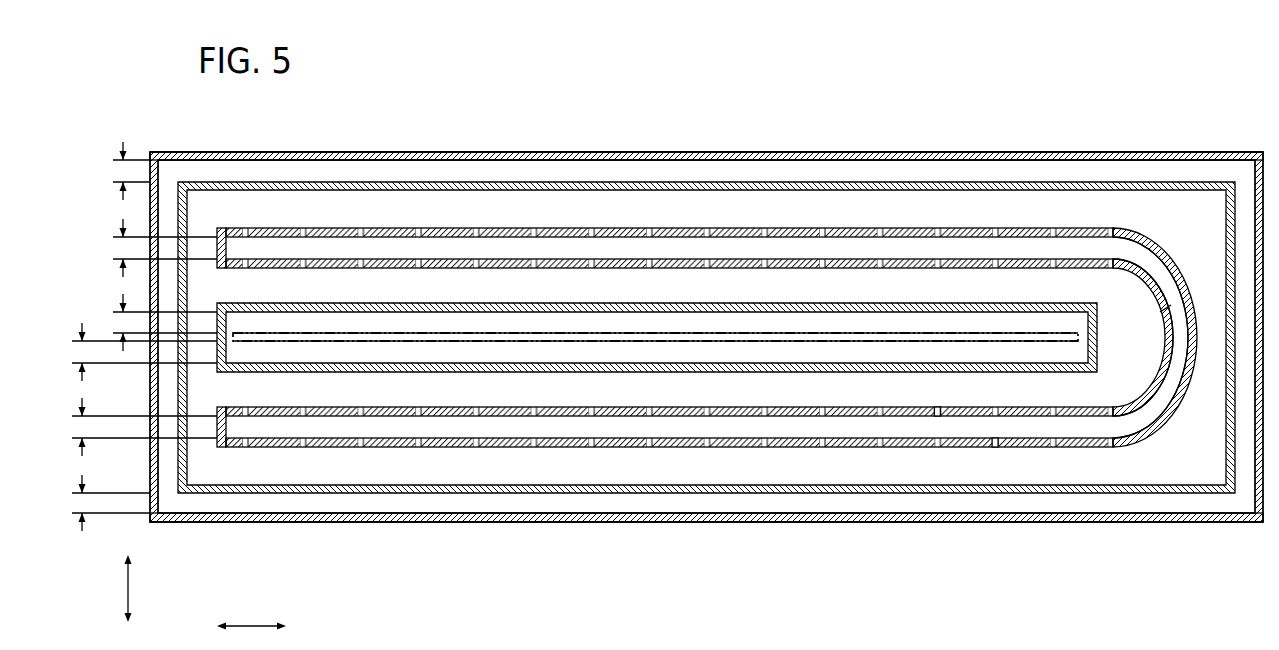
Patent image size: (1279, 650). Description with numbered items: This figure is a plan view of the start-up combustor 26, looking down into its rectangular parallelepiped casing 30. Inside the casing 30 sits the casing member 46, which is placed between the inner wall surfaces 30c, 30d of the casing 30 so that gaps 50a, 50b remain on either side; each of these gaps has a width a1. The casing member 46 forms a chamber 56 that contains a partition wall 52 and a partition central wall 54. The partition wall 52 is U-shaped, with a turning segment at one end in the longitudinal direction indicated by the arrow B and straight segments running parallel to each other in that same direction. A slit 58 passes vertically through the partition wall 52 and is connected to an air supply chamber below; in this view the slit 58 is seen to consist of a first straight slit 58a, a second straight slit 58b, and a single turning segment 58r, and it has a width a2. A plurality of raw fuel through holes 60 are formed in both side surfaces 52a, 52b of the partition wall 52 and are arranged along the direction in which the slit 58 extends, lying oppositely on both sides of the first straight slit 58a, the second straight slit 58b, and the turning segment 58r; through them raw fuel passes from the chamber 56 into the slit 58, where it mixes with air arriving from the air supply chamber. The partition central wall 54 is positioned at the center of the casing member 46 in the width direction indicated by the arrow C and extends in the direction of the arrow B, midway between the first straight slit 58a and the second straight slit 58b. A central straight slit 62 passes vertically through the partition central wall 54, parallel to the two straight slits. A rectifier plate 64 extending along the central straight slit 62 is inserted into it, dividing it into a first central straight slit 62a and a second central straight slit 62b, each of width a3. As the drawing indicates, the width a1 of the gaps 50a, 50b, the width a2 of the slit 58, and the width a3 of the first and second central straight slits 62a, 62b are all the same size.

The start-up combustor 26 is at (363, 96).
The casing 30 is at (706, 339).
The inner wall surface 30c is at (531, 513).
The inner wall surface 30d is at (447, 158).
The casing member 46 is at (1226, 502).
The gap 50a is at (686, 502).
The gap 50b is at (800, 172).
The partition wall 52 is at (707, 323).
The side surface of partition wall 52a is at (630, 228).
The side surface of partition wall 52b is at (558, 240).
The partition central wall 54 is at (282, 380).
The chamber 56 is at (887, 210).
The slit 58 is at (1075, 260).
The first straight slit 58a is at (953, 427).
The second straight slit 58b is at (1042, 250).
The turning segment 58r is at (1147, 315).
The raw fuel through holes 60 is at (937, 410).
The central straight slit 62 is at (655, 464).
The first central straight slit 62a is at (432, 345).
The second central straight slit 62b is at (401, 318).
The rectifier plate 64 is at (871, 342).
The width of gaps a1 is at (101, 336).
The width of slit a2 is at (135, 337).
The width of central straight slits a3 is at (135, 337).
The longitudinal direction B is at (251, 615).
The width direction C is at (136, 588).